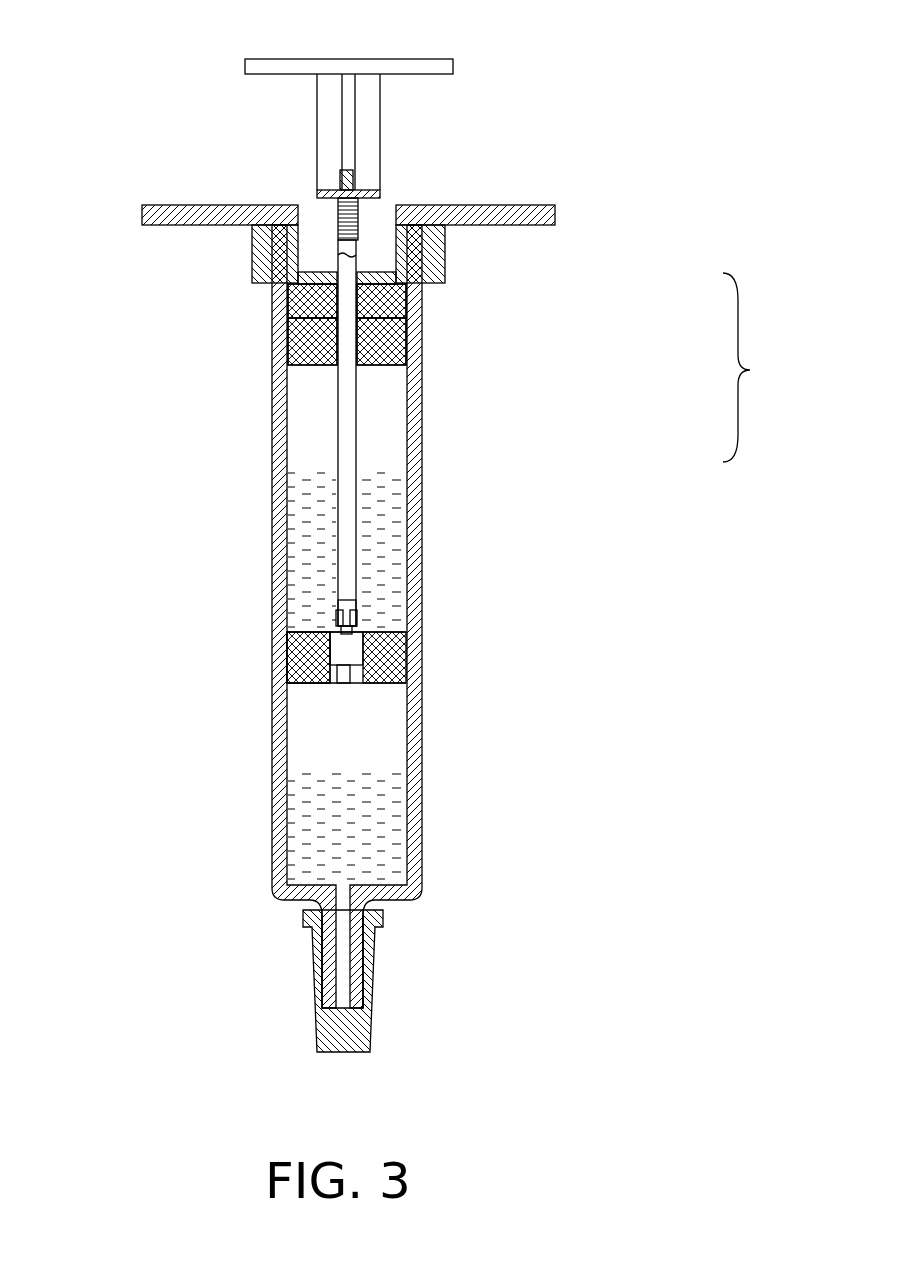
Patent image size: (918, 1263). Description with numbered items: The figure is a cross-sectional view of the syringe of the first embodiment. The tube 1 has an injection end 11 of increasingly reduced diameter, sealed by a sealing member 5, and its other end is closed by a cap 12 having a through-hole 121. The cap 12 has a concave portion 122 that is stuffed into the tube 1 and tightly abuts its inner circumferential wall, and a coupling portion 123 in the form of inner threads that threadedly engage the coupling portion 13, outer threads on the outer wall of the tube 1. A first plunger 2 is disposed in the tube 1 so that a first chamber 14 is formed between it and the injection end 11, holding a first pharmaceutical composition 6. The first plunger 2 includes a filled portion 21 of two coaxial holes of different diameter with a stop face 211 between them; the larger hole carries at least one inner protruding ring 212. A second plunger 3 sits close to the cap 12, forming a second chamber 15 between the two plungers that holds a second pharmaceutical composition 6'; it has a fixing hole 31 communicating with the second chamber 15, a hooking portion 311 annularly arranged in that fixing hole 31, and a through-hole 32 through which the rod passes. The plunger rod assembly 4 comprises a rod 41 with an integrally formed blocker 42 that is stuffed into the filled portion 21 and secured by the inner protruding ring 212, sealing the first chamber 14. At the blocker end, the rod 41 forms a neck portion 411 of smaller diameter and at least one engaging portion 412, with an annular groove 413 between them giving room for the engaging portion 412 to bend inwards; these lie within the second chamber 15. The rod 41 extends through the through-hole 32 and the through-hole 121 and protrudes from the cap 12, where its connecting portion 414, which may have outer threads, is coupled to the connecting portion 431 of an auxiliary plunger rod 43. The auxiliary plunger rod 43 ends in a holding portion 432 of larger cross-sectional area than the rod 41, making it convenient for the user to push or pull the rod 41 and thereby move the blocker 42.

The tube 1 is at (415, 735).
The injection end 11 is at (360, 945).
The cap 12 is at (156, 206).
The concave portion 122 is at (375, 272).
The coupling portion 13 is at (265, 255).
The coupling portion 123 is at (297, 254).
The through-hole 121 is at (300, 284).
The first chamber 14 is at (305, 738).
The second chamber 15 is at (300, 410).
The first plunger 2 is at (385, 683).
The filled portion 21 is at (287, 648).
The stop face 211 is at (286, 675).
The inner protruding ring 212 is at (287, 660).
The second plunger 3 is at (300, 365).
The fixing hole 31 is at (410, 358).
The hooking portion 311 is at (387, 322).
The through-hole 32 is at (406, 297).
The plunger rod assembly 4 is at (745, 367).
The rod 41 is at (345, 435).
The neck portion 411 is at (335, 622).
The engaging portion 412 is at (357, 622).
The annular groove 413 is at (354, 620).
The connecting portion 414 is at (307, 171).
The blocker 42 is at (405, 632).
The auxiliary plunger rod 43 is at (372, 146).
The connecting portion 431 is at (328, 200).
The holding portion 432 is at (428, 65).
The sealing member 5 is at (318, 1025).
The first pharmaceutical composition 6 is at (299, 828).
The second pharmaceutical composition 6' is at (300, 526).